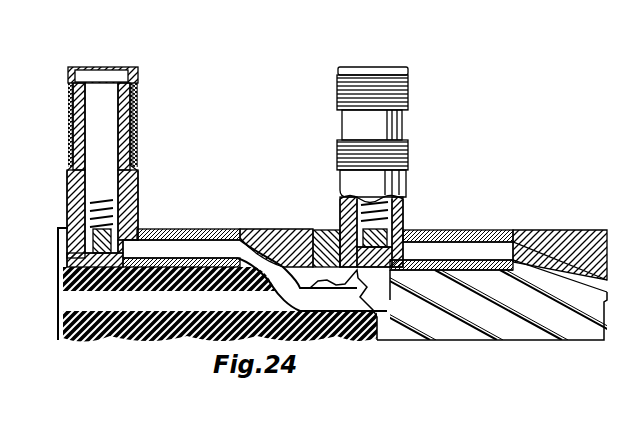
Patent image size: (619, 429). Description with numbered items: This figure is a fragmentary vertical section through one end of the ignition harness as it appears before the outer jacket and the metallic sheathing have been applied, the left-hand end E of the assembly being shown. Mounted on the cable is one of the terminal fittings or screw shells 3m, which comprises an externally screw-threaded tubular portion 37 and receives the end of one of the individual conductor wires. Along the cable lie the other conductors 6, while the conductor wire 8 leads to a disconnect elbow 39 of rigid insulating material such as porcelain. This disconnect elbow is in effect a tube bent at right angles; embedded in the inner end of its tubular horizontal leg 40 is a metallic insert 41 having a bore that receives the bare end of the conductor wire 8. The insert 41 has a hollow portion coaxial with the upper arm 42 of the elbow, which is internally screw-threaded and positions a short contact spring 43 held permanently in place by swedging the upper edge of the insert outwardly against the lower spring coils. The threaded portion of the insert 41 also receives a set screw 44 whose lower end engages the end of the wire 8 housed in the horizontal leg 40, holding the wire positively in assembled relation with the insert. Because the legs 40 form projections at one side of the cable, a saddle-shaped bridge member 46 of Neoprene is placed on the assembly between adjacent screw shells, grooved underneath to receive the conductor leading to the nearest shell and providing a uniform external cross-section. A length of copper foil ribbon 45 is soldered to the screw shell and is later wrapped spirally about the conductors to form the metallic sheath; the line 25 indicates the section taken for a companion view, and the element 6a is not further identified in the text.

The screw shell 3m is at (127, 150).
The tubular portion 37 is at (132, 120).
The upper arm 42 is at (135, 133).
The left-hand end E is at (52, 228).
The plate 6a is at (150, 253).
The bridge member 46 is at (265, 236).
The set screw 44 is at (326, 231).
The contact spring 43 is at (408, 200).
The disconnect elbow 39 is at (398, 224).
The metallic insert 41 is at (407, 223).
The conductor 6 is at (445, 250).
The horizontal leg 40 is at (492, 233).
The section line 25 is at (473, 80).
The conductor wire 8 is at (390, 300).
The copper foil ribbon 45 is at (428, 330).